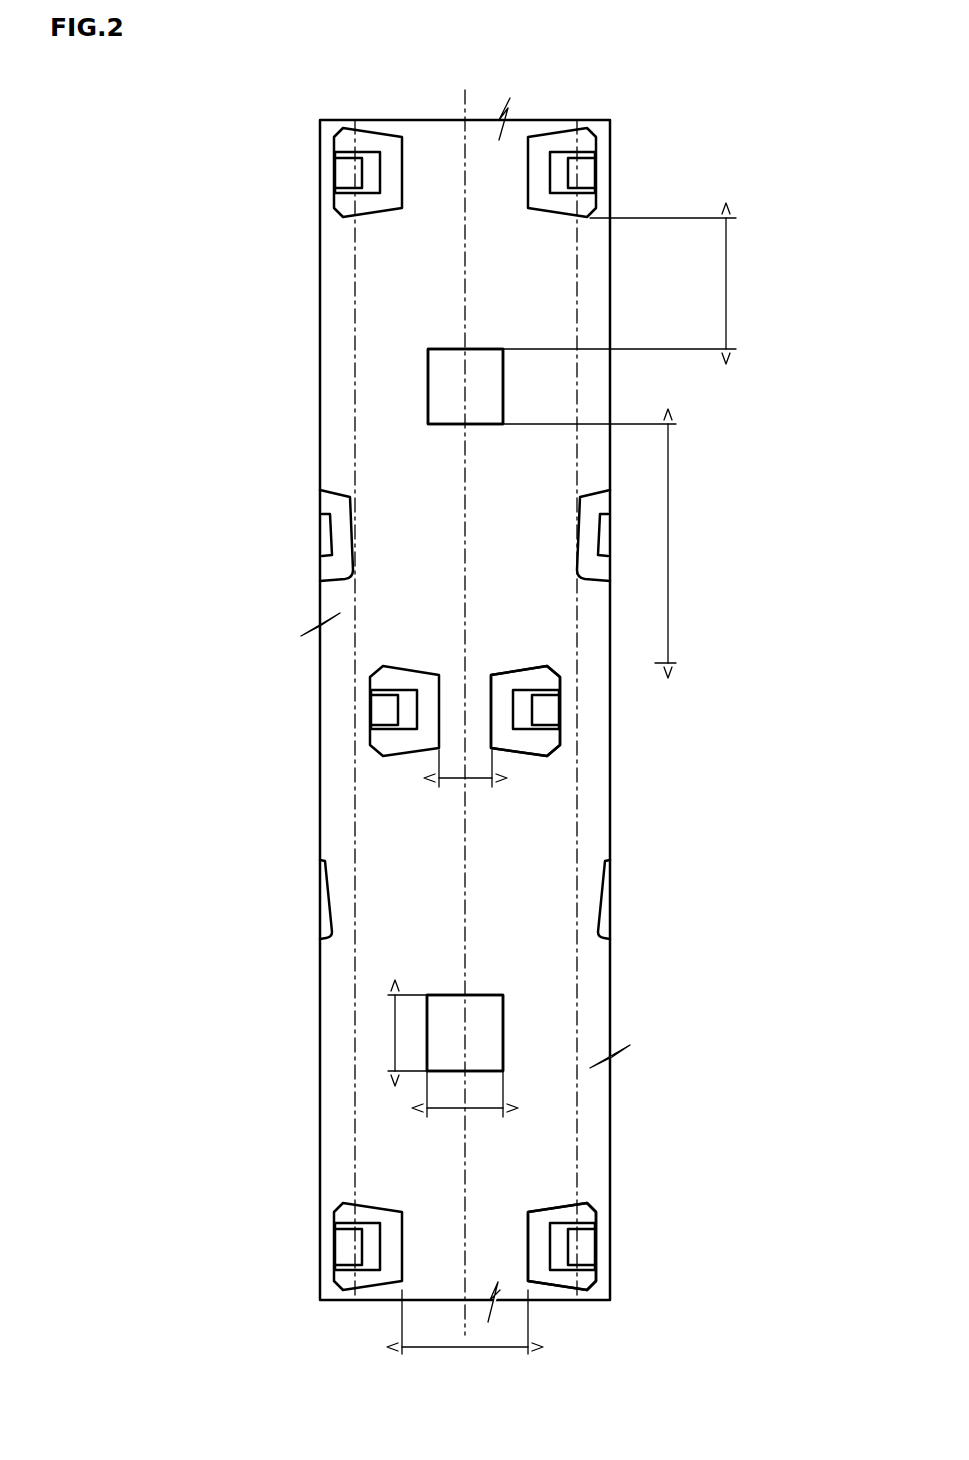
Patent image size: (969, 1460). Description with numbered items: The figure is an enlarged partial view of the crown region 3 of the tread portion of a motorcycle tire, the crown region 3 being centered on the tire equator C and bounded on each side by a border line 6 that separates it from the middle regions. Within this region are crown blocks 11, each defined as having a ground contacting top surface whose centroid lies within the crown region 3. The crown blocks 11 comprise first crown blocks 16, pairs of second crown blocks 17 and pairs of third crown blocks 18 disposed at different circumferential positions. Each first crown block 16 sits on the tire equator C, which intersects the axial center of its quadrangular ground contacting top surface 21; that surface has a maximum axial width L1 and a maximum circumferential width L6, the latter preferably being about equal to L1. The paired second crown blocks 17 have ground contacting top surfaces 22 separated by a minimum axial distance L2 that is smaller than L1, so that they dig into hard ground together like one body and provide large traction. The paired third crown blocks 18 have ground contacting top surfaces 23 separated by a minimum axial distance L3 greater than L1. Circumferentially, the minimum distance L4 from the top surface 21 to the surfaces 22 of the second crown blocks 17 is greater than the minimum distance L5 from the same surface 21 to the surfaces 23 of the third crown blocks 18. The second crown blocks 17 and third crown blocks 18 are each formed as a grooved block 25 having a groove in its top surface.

The crown region 3 is at (432, 180).
The tire equator C is at (463, 698).
The border line 6 is at (352, 415).
The crown block 11 is at (370, 173).
The third crown block 18 is at (556, 170).
The ground contacting top surface 23 is at (562, 208).
The second crown block 17 is at (388, 712).
The grooved block 25 is at (543, 978).
The ground contacting top surface 22 is at (392, 740).
The ground contacting top surface 21 is at (446, 388).
The first crown block 16 is at (484, 1040).
The maximum axial width L1 is at (470, 1122).
The minimum axial distance L2 is at (470, 783).
The minimum axial distance L3 is at (465, 1337).
The minimum circumferential distance L4 is at (605, 543).
The minimum circumferential distance L5 is at (634, 283).
The maximum circumferential width L6 is at (395, 1040).